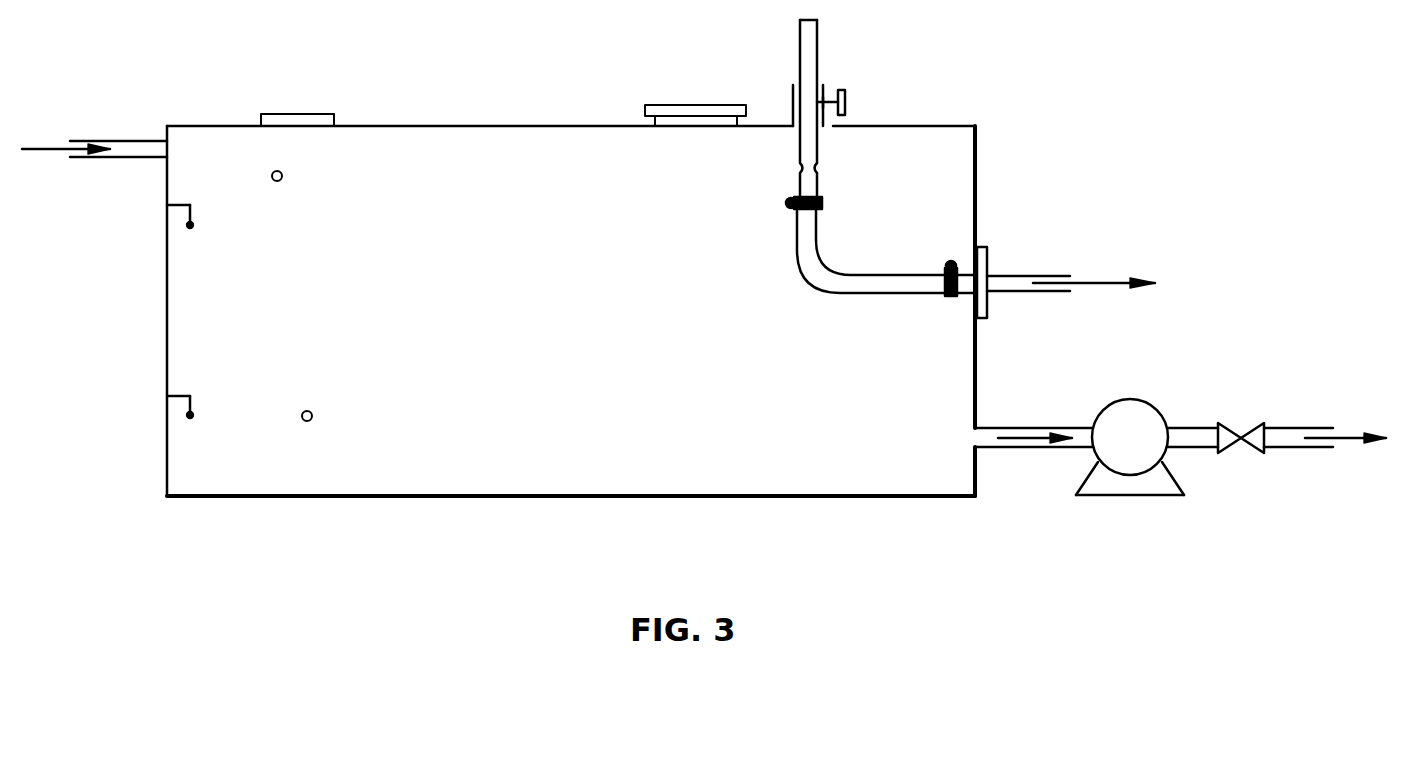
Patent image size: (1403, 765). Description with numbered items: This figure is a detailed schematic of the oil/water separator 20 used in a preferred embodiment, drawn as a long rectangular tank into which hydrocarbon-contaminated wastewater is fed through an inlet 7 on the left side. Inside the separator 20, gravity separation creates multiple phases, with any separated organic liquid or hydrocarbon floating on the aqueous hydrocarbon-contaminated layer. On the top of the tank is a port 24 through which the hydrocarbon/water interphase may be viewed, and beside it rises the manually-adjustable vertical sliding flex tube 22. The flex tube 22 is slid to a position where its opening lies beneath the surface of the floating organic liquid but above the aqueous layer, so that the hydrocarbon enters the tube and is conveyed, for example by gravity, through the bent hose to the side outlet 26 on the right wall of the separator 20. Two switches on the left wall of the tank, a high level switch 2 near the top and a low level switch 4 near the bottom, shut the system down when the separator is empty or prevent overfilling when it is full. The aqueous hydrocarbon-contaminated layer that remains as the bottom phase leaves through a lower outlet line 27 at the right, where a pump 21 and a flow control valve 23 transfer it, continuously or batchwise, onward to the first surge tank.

The high level switch 2 is at (183, 204).
The low level switch 4 is at (182, 395).
The inlet line 7 is at (47, 149).
The separator 20 is at (465, 126).
The pump 21 is at (1133, 399).
The manually-adjustable vertical sliding flex tube 22 is at (817, 46).
The flow control valve 23 is at (1244, 423).
The port 24 is at (665, 105).
The side outlet 26 is at (1110, 283).
The drain line 27 is at (1034, 428).